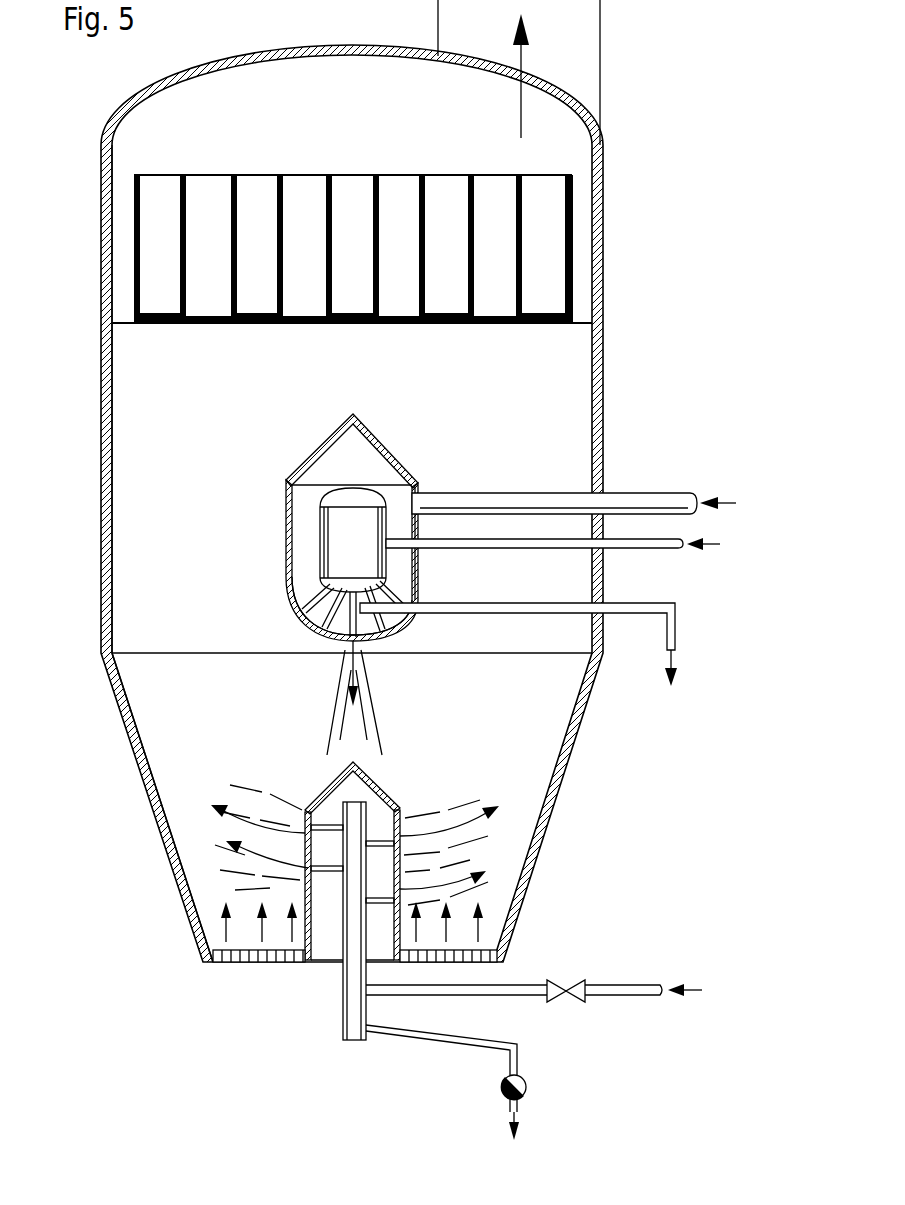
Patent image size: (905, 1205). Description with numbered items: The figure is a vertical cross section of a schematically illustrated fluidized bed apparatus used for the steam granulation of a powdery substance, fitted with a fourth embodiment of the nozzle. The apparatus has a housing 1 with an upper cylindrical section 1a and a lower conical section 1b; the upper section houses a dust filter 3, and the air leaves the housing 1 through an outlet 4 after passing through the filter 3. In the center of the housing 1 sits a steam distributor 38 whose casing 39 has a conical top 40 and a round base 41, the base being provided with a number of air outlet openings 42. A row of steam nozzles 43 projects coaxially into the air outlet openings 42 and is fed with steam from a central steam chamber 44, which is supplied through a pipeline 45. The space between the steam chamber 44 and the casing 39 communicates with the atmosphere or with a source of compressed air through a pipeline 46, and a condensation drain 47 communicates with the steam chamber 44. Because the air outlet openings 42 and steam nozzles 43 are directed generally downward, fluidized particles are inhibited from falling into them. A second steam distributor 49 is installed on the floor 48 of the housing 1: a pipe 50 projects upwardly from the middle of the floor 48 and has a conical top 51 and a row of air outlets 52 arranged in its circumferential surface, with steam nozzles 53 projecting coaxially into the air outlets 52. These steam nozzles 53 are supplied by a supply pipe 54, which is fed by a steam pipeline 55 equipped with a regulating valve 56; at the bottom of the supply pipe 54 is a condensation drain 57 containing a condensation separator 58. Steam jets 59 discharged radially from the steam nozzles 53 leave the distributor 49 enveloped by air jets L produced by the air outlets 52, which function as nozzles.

The housing 1 is at (610, 372).
The upper cylindrical section 1a is at (101, 364).
The lower conical section 1b is at (130, 736).
The dust filter 3 is at (567, 218).
The outlet 4 is at (600, 31).
The steam distributor 38 is at (284, 464).
The casing 39 is at (420, 572).
The conical top 40 is at (324, 441).
The round base 41 is at (300, 625).
The air outlet openings 42 is at (384, 630).
The steam nozzles 43 is at (326, 630).
The central steam chamber 44 is at (342, 518).
The pipeline 45 is at (655, 548).
The pipeline 46 is at (655, 500).
The condensation drain 47 is at (676, 633).
The floor 48 is at (253, 963).
The steam distributor 49 is at (406, 790).
The pipe 50 is at (405, 865).
The conical top 51 is at (326, 790).
The air outlets 52 is at (240, 832).
The steam nozzles 53 is at (330, 871).
The supply pipe 54 is at (345, 1021).
The steam pipeline 55 is at (530, 986).
The regulating valve 56 is at (578, 981).
The condensation drain 57 is at (414, 1043).
The condensation separator 58 is at (527, 1085).
The steam jets 59 is at (456, 830).
The air jets L is at (375, 690).